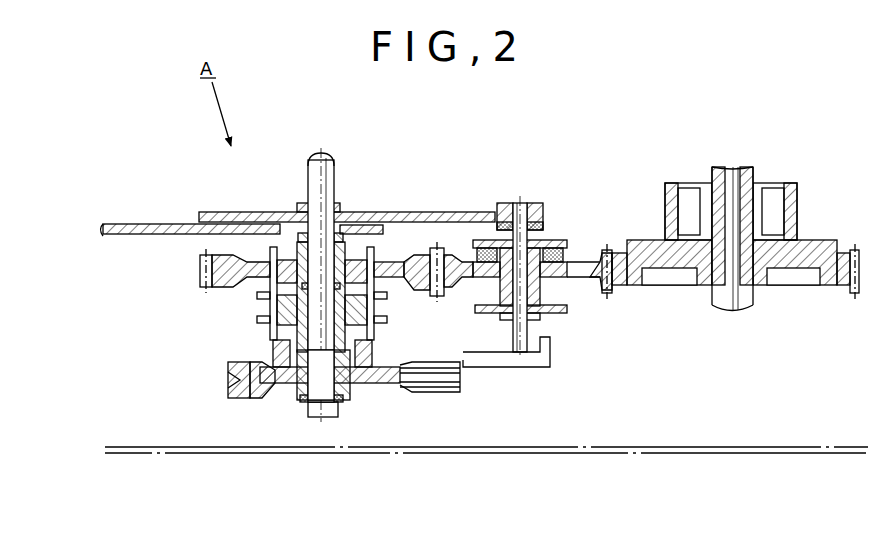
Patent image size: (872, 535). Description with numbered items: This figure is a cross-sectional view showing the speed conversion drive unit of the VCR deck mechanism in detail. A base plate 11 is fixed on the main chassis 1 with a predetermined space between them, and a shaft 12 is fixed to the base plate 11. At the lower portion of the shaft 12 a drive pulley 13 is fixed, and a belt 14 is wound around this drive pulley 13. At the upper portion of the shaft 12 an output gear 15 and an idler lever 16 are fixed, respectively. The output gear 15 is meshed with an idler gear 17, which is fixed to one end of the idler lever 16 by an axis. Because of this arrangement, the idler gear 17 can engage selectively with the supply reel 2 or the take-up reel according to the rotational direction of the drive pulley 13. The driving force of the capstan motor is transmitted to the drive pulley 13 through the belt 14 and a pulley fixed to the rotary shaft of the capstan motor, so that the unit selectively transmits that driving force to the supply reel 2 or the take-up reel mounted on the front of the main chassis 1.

The main chassis 1 is at (571, 455).
The supply reel 2 is at (812, 185).
The base plate 11 is at (136, 222).
The shaft 12 is at (315, 150).
The drive pulley 13 is at (250, 372).
The belt 14 is at (422, 390).
The output gear 15 is at (403, 262).
The idler lever 16 is at (466, 212).
The idler gear 17 is at (582, 240).